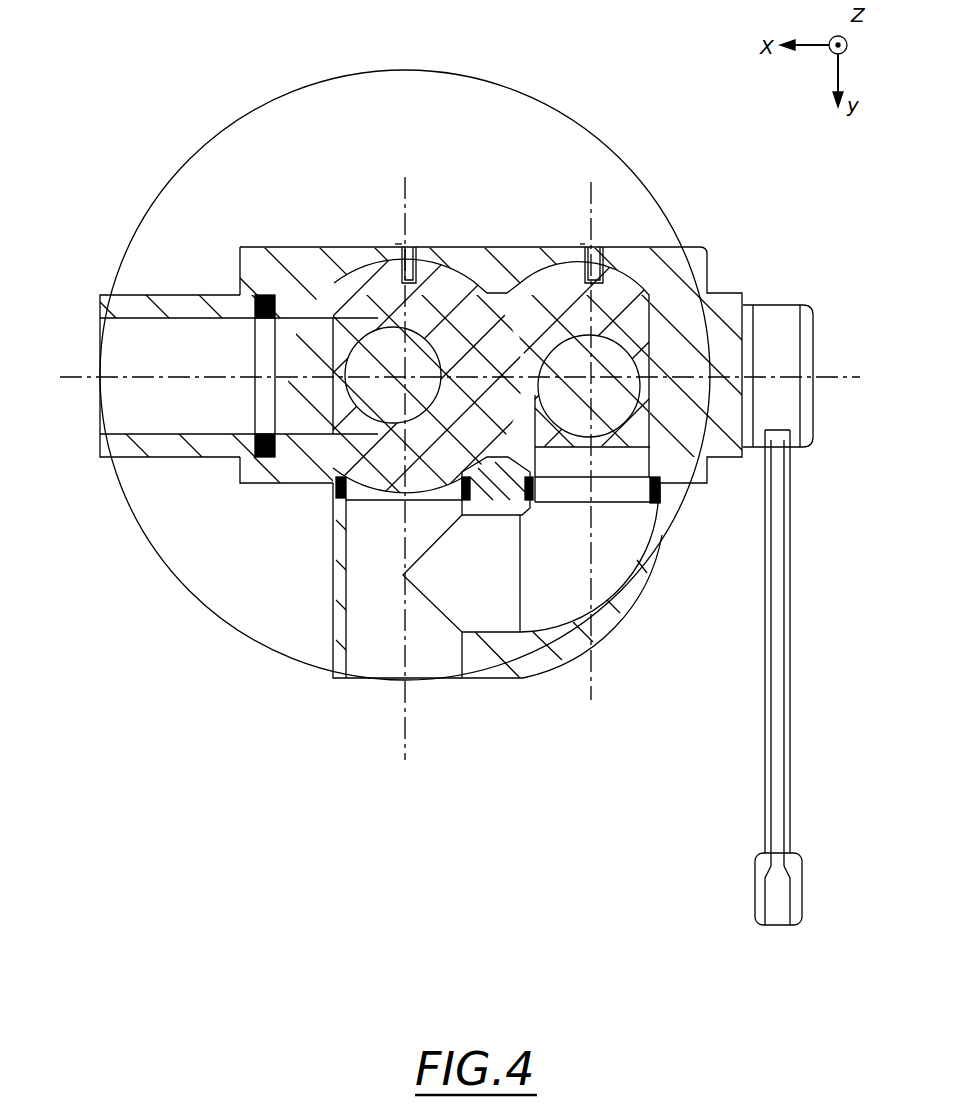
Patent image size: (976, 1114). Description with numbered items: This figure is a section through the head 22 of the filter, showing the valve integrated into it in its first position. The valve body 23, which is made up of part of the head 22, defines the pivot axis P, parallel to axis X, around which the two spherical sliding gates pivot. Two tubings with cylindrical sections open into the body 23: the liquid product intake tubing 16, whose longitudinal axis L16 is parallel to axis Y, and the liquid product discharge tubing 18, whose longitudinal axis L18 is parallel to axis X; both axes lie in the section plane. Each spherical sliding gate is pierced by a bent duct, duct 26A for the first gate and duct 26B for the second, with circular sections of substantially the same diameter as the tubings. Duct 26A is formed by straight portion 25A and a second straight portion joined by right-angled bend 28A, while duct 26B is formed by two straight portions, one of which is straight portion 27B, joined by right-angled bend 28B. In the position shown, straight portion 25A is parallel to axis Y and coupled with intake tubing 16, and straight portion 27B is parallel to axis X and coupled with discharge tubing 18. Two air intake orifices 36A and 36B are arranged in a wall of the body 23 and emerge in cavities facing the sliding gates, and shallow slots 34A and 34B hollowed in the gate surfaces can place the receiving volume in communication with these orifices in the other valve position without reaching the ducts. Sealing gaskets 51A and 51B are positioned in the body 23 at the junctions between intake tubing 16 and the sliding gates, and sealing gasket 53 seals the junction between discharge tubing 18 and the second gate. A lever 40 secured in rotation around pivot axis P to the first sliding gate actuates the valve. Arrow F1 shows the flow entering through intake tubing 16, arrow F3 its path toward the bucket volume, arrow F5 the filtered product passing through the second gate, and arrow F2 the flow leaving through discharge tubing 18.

The liquid product intake tubing 16 is at (425, 655).
The liquid product discharge tubing 18 is at (150, 345).
The head 22 is at (415, 120).
The body 23 is at (285, 262).
The straight portion 25A is at (640, 432).
The duct 26A is at (615, 350).
The duct 26B is at (378, 328).
The straight portion 27B is at (270, 468).
The right-angled bend 28A is at (575, 345).
The right-angled bend 28B is at (425, 335).
The slot 34A is at (598, 255).
The slot 34B is at (410, 255).
The air intake orifice 36A is at (583, 245).
The air intake orifice 36B is at (395, 245).
The lever 40 is at (778, 715).
The sealing gasket 51A is at (657, 505).
The sealing gasket 51B is at (338, 497).
The sealing gasket 53 is at (300, 425).
The longitudinal axis L16 is at (405, 748).
The longitudinal axis L18 is at (85, 380).
The pivot axis P is at (845, 375).
The arrow F1 is at (383, 620).
The arrow F2 is at (135, 397).
The arrow F3 is at (575, 412).
The arrow F5 is at (390, 362).